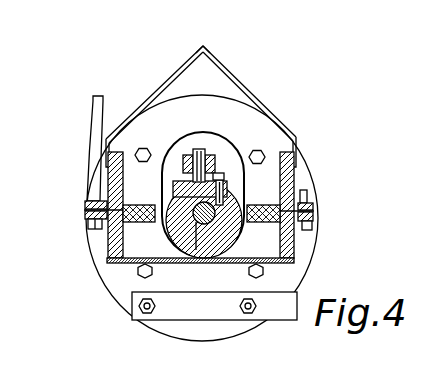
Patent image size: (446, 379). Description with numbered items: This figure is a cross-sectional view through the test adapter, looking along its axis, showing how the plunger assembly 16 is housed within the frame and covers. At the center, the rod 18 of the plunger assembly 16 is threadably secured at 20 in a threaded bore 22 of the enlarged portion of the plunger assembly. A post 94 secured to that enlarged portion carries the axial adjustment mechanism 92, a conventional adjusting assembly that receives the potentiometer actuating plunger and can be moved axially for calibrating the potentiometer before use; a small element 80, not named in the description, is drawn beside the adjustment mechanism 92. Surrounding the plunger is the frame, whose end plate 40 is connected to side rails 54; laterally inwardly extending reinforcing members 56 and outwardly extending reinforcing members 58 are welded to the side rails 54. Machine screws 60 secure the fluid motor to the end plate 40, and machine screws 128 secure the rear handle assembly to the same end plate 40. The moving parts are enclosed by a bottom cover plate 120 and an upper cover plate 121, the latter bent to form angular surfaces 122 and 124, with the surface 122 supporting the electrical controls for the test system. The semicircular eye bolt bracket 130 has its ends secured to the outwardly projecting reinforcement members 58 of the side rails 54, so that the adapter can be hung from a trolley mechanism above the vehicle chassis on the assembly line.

The plunger assembly 16 is at (233, 198).
The rod 18 is at (171, 192).
The threaded connection 20 is at (196, 250).
The threaded bore 22 is at (205, 224).
The end plate 40 is at (258, 112).
The side rails 54 is at (116, 232).
The inwardly extending reinforcing members 56 is at (138, 222).
The outwardly extending reinforcing members 58 is at (84, 214).
The machine screws 60 is at (141, 149).
The set screw 80 is at (221, 173).
The axial adjustment mechanism 92 is at (186, 156).
The post 94 is at (203, 150).
The bottom cover plate 120 is at (128, 265).
The upper cover plate 121 is at (216, 57).
The angular surface 122 is at (254, 93).
The angular surface 124 is at (178, 70).
The machine screws 128 is at (214, 329).
The eye bolt bracket 130 is at (93, 143).